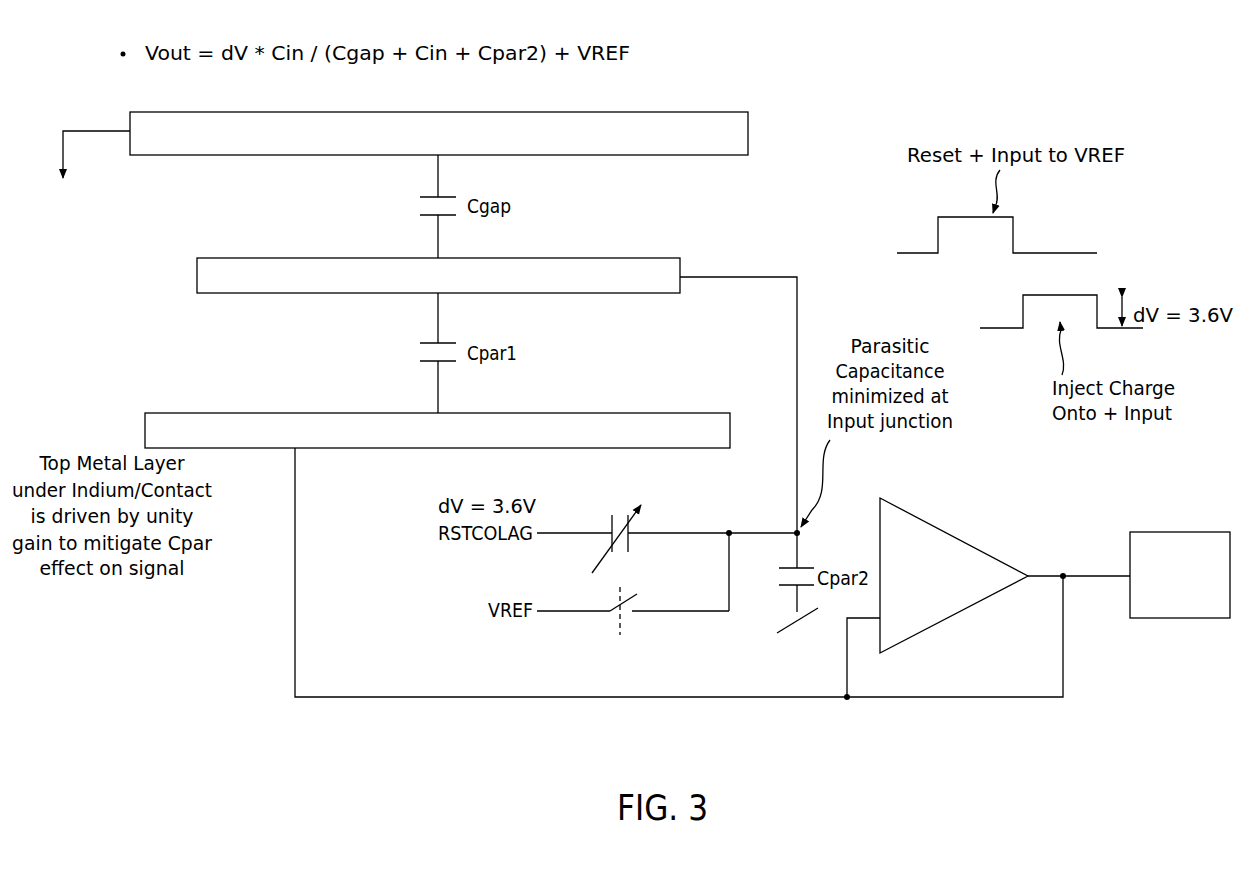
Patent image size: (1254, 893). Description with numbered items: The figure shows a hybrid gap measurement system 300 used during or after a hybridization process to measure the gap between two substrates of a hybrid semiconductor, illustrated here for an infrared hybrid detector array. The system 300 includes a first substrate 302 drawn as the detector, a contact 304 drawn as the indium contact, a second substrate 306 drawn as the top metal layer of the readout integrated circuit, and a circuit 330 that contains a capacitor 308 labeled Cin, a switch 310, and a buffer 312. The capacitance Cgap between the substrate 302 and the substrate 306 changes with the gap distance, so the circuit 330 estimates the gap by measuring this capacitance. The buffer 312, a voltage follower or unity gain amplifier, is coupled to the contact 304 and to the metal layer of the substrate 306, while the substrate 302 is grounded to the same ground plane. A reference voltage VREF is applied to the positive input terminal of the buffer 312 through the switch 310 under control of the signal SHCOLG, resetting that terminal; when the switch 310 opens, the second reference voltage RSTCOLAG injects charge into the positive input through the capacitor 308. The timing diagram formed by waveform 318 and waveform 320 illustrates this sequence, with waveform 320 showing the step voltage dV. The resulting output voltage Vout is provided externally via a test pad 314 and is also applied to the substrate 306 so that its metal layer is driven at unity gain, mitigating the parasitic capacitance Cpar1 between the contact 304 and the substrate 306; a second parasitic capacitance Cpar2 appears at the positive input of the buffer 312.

The hybrid gap measurement system 300 is at (194, 648).
The substrate 302 is at (143, 155).
The contact 304 is at (197, 277).
The substrate 306 is at (145, 422).
The capacitor 308 is at (604, 520).
The switch 310 is at (613, 598).
The buffer 312 is at (955, 615).
The test pad 314 is at (1212, 618).
The waveform 318 is at (1105, 241).
The waveform 320 is at (1105, 284).
The circuit 330 is at (1005, 569).